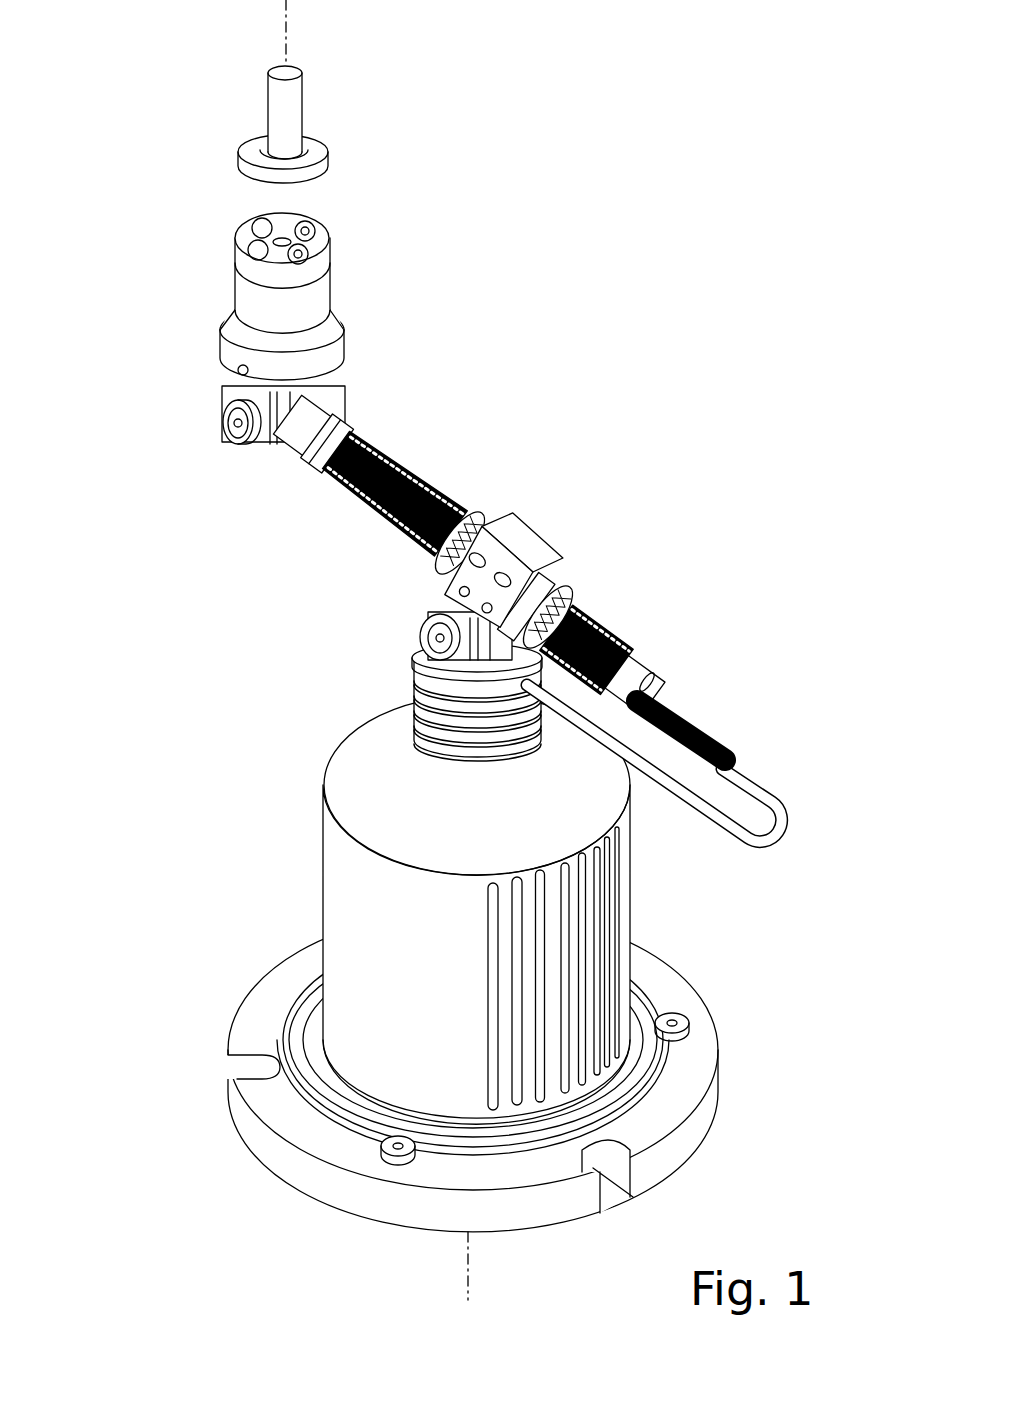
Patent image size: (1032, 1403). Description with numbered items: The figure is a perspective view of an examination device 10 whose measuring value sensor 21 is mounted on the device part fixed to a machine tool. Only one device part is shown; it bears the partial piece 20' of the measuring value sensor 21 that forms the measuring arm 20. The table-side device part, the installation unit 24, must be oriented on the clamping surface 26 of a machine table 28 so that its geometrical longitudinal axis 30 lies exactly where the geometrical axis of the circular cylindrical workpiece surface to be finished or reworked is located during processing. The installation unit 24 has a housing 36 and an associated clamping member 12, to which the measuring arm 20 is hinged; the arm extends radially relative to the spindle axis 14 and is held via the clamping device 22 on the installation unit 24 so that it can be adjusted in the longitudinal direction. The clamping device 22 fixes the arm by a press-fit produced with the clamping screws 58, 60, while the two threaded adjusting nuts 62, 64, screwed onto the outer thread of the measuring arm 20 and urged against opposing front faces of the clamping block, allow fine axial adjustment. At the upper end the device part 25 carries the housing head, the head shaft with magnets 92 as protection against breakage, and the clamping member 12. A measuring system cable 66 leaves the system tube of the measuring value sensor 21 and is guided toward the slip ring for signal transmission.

The examination device 10 is at (612, 276).
The clamping member 12 is at (292, 106).
The spindle axis 14 is at (288, 13).
The measuring arm 20 is at (414, 448).
The partial piece 20' is at (728, 567).
The measuring value sensor 21 is at (705, 688).
The clamping device 22 is at (545, 540).
The installation unit 24 is at (745, 1038).
The device part 25 is at (248, 302).
The clamping surface 26 is at (255, 1015).
The machine table 28 is at (688, 1165).
The geometrical longitudinal axis 30 is at (470, 1282).
The housing 36 is at (345, 855).
The clamping screw 58 is at (487, 512).
The clamping screw 60 is at (515, 545).
The threaded adjusting nut 62 is at (575, 567).
The threaded adjusting nut 64 is at (428, 572).
The measuring system cable 66 is at (765, 860).
The magnets 92 is at (333, 236).